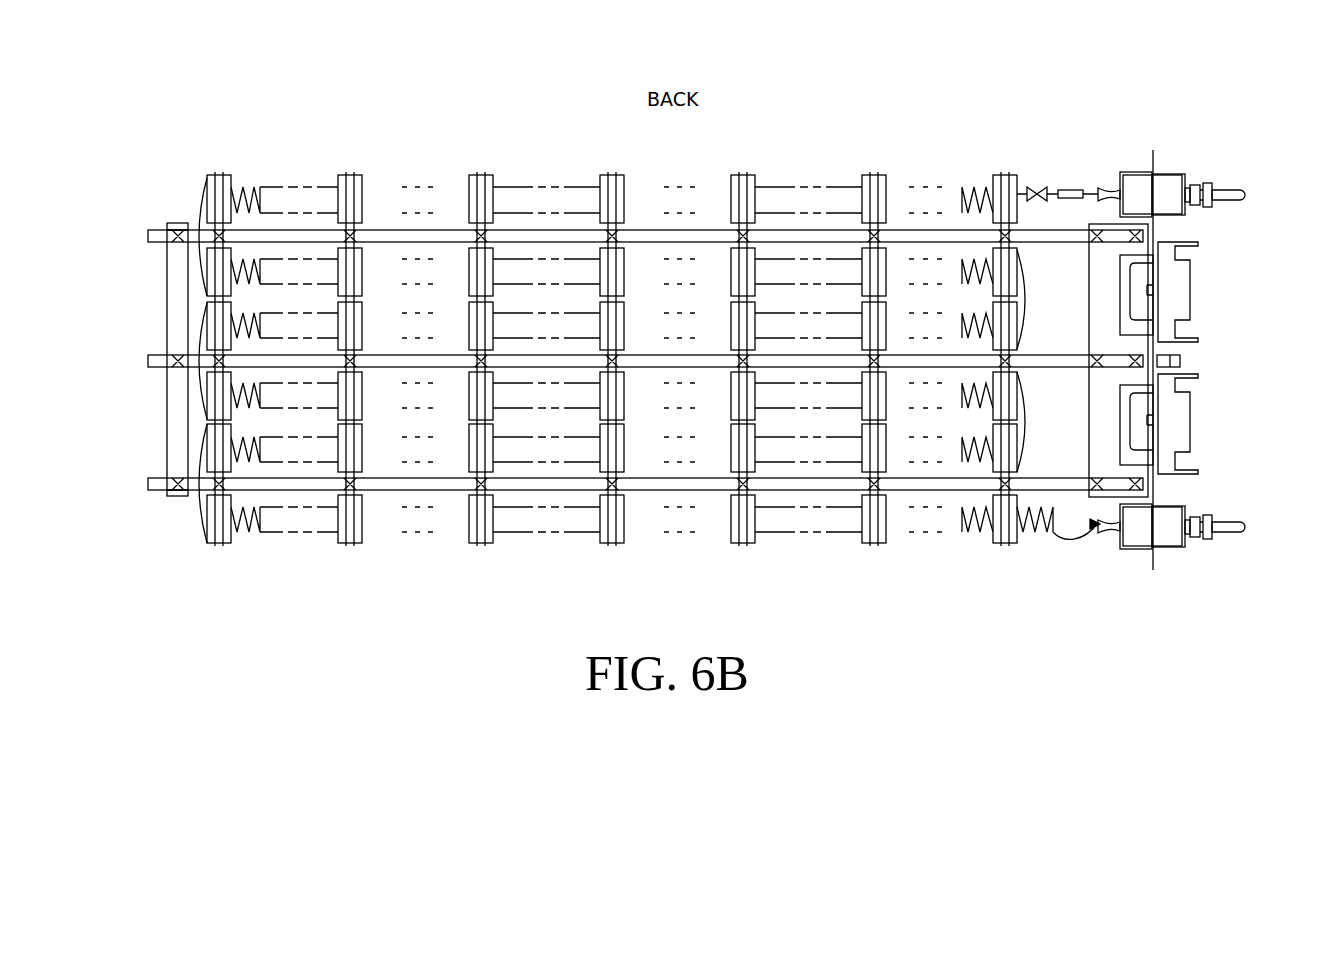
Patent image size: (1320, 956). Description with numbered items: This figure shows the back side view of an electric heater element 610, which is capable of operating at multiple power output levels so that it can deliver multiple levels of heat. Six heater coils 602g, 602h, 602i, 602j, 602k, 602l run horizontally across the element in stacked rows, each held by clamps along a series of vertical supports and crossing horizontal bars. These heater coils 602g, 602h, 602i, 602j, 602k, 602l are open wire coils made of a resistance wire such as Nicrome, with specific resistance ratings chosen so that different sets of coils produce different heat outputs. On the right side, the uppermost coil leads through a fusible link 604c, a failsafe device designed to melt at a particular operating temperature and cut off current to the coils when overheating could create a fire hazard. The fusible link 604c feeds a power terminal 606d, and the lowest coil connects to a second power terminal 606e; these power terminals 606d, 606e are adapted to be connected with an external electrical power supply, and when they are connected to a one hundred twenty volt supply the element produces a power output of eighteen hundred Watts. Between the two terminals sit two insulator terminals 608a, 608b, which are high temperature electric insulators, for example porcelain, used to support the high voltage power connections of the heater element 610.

The electric heater element 610 is at (375, 98).
The heater coil 602g is at (273, 188).
The heater coil 602h is at (273, 284).
The heater coil 602i is at (273, 338).
The heater coil 602j is at (275, 408).
The heater coil 602k is at (275, 462).
The heater coil 602l is at (273, 535).
The fusible link 604c is at (1070, 190).
The power terminal 606d is at (1230, 205).
The power terminal 606e is at (1230, 537).
The insulator terminal 608a is at (1175, 290).
The insulator terminal 608b is at (1175, 428).